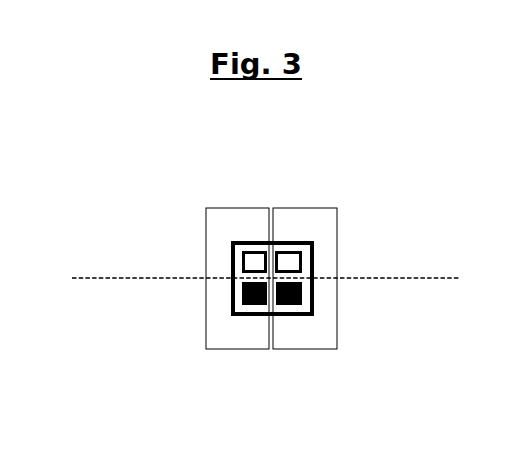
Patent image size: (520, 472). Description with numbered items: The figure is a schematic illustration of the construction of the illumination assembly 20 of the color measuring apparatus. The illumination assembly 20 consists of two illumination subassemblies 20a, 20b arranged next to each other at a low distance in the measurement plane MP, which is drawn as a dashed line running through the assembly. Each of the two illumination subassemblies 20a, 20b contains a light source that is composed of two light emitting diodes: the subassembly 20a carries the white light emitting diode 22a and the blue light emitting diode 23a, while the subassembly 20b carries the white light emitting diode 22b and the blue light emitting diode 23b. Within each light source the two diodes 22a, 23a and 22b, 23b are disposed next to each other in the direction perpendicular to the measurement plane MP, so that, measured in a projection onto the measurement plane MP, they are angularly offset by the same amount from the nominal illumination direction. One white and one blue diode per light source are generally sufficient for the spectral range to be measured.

The illumination assembly 20 is at (279, 285).
The illumination subassembly 20a is at (327, 340).
The illumination subassembly 20b is at (218, 338).
The white light emitting diode 22a is at (294, 262).
The white light emitting diode 22b is at (252, 262).
The blue light emitting diode 23a is at (300, 294).
The blue light emitting diode 23b is at (238, 298).
The measurement plane MP is at (433, 280).